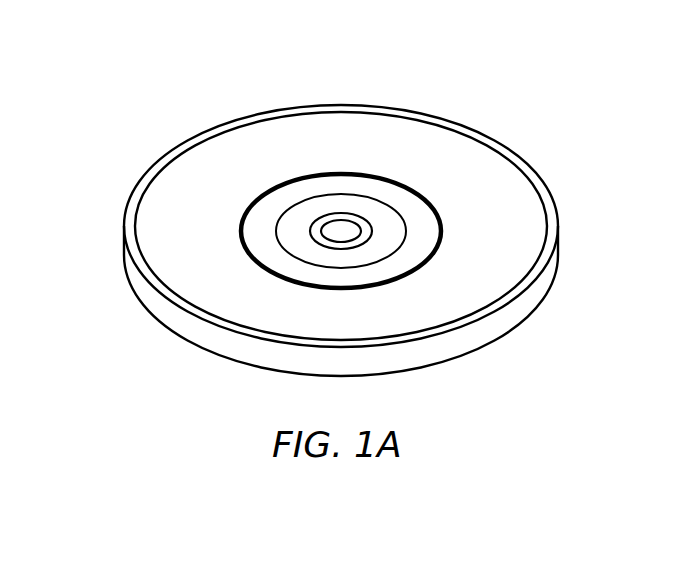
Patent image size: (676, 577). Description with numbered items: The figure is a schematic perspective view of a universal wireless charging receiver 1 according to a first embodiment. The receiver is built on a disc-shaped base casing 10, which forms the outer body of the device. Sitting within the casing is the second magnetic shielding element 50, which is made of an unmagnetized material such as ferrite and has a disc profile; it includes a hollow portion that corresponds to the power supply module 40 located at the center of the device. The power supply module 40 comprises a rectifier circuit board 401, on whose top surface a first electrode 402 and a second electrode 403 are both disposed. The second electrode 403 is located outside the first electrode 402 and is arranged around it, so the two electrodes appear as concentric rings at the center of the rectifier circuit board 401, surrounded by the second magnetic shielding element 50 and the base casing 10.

The universal wireless charging receiver 1 is at (70, 22).
The base casing 10 is at (163, 307).
The power supply module 40 is at (410, 272).
The second magnetic shielding element 50 is at (195, 175).
The rectifier circuit board 401 is at (417, 223).
The first electrode 402 is at (340, 228).
The second electrode 403 is at (382, 222).